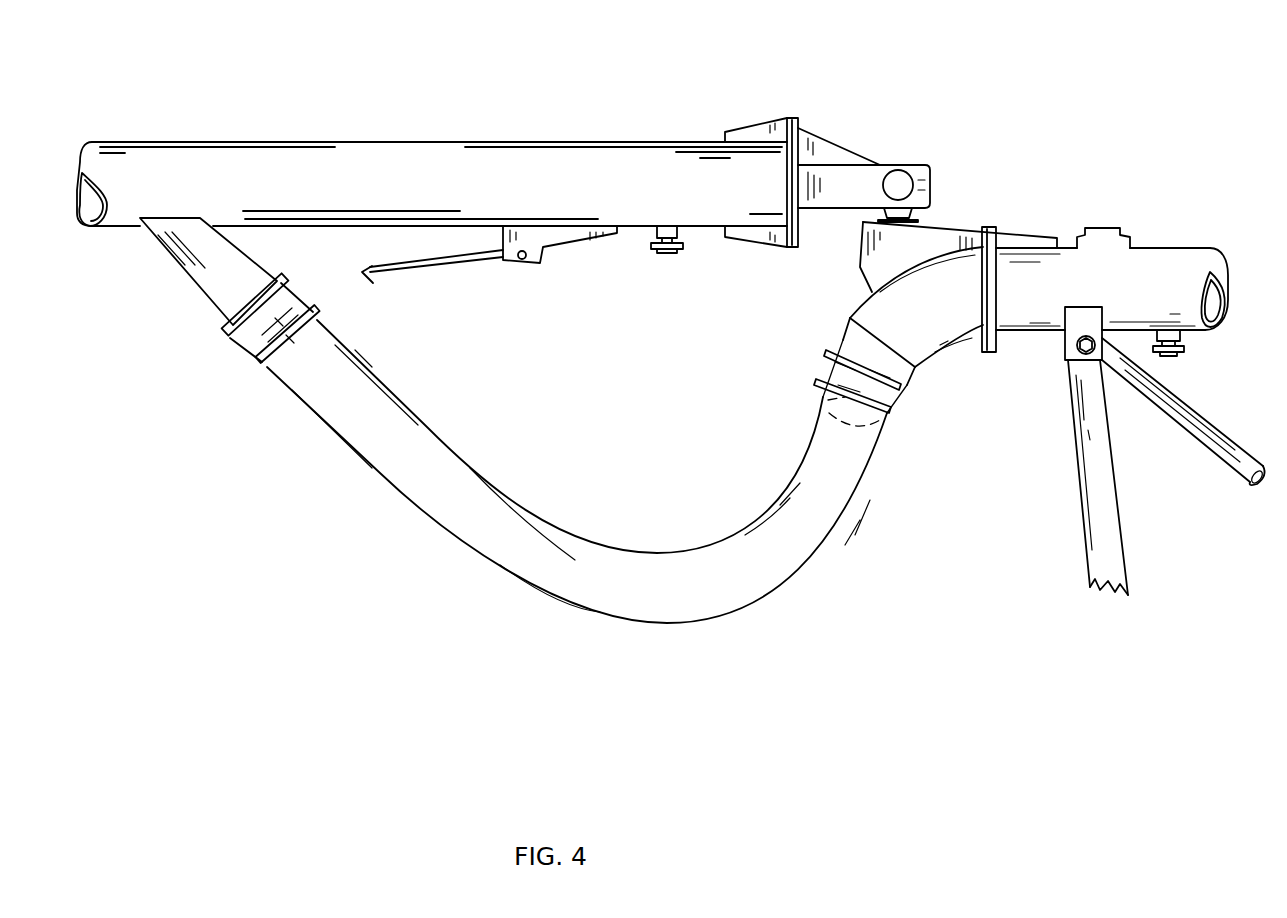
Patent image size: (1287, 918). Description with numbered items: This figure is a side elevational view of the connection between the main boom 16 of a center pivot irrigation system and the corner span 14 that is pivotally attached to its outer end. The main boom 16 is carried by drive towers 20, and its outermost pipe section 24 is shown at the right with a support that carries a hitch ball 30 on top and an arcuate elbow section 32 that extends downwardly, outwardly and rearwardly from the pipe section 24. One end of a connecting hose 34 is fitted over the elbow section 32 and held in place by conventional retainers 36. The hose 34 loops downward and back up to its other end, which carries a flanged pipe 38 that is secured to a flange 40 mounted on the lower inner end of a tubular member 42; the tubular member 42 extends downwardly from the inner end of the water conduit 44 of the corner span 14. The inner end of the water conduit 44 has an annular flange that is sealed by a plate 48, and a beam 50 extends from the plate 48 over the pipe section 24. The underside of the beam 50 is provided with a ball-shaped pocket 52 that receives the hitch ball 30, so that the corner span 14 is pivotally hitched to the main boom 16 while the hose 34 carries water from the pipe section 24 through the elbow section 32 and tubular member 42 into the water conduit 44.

The corner span 14 is at (566, 100).
The main boom 16 is at (1150, 200).
The drive tower 20 is at (1118, 525).
The pipe section 24 is at (1157, 275).
The hitch ball 30 is at (853, 213).
The elbow section 32 is at (820, 398).
The connecting hose 34 is at (520, 525).
The retainers 36 is at (252, 340).
The flanged pipe 38 is at (287, 283).
The flange 40 is at (230, 325).
The tubular member 42 is at (237, 263).
The water conduit 44 is at (663, 160).
The plate 48 is at (802, 123).
The beam 50 is at (873, 177).
The ball-shaped pocket 52 is at (935, 192).